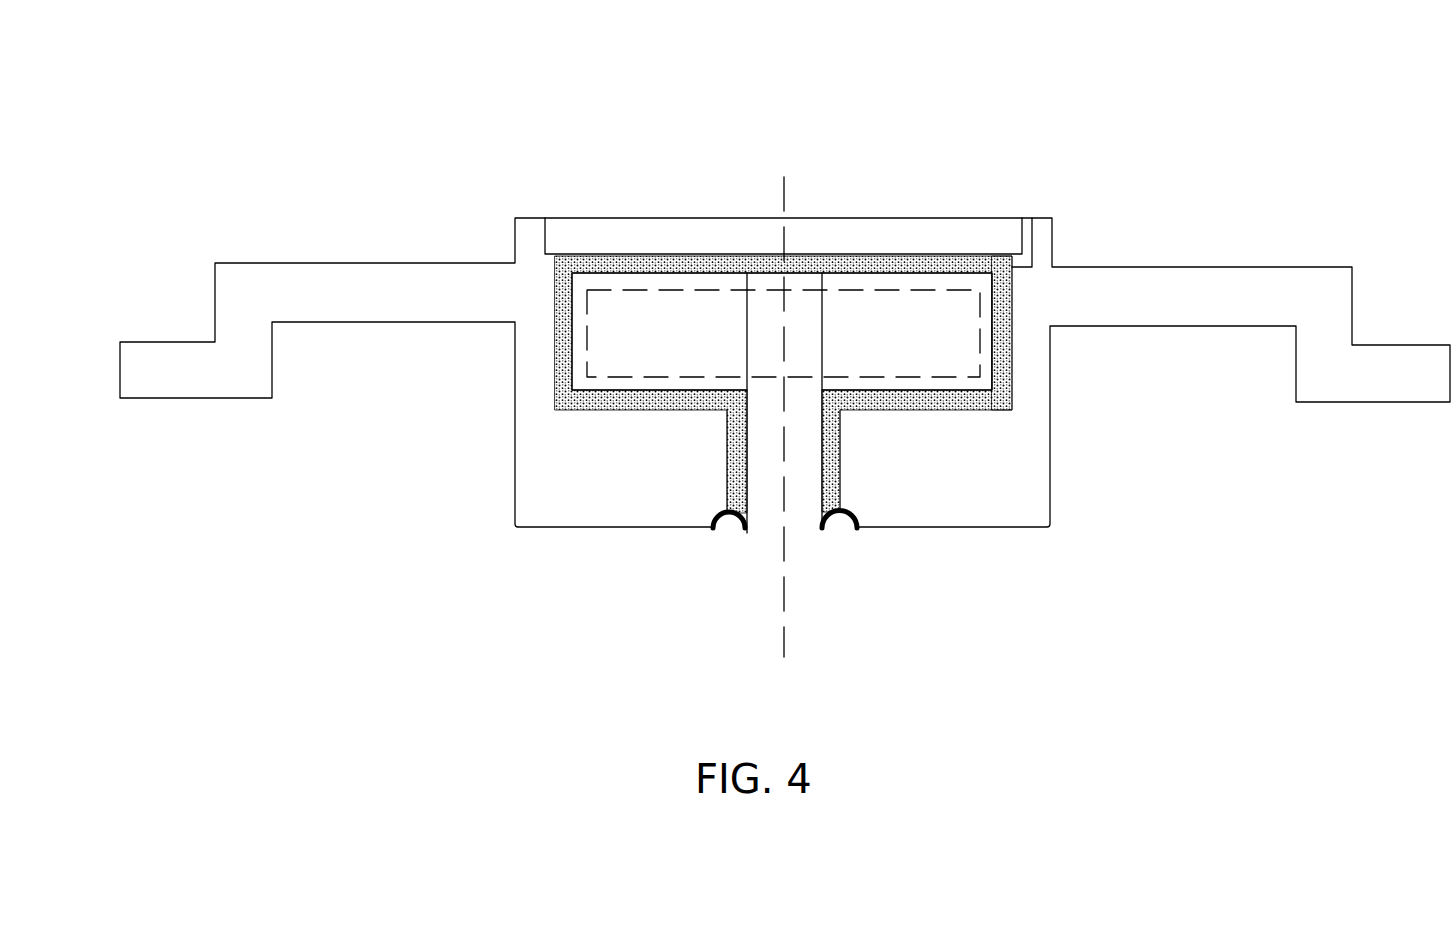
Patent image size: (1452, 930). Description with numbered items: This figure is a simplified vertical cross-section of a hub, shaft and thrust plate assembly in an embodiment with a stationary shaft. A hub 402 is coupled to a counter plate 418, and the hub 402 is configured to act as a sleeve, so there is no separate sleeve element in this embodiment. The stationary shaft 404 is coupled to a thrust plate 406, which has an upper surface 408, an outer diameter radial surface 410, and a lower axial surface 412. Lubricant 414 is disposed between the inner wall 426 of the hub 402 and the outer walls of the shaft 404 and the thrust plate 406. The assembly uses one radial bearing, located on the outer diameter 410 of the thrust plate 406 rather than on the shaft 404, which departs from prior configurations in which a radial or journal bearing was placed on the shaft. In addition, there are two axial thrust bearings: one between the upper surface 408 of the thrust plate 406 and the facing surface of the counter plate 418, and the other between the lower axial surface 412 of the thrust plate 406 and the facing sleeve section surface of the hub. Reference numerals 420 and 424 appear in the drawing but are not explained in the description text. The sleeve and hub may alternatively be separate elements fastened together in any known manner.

The hub 402 is at (1270, 295).
The shaft 404 is at (797, 490).
The thrust plate 406 is at (853, 337).
The upper surface 408 is at (727, 258).
The outer diameter radial surface 410 is at (1012, 308).
The lower axial surface 412 is at (902, 390).
The lubricant 414 is at (727, 465).
The counter plate 418 is at (600, 233).
The seal 420 is at (738, 517).
The right tube wall 424 is at (840, 436).
The inner wall 426 is at (840, 480).